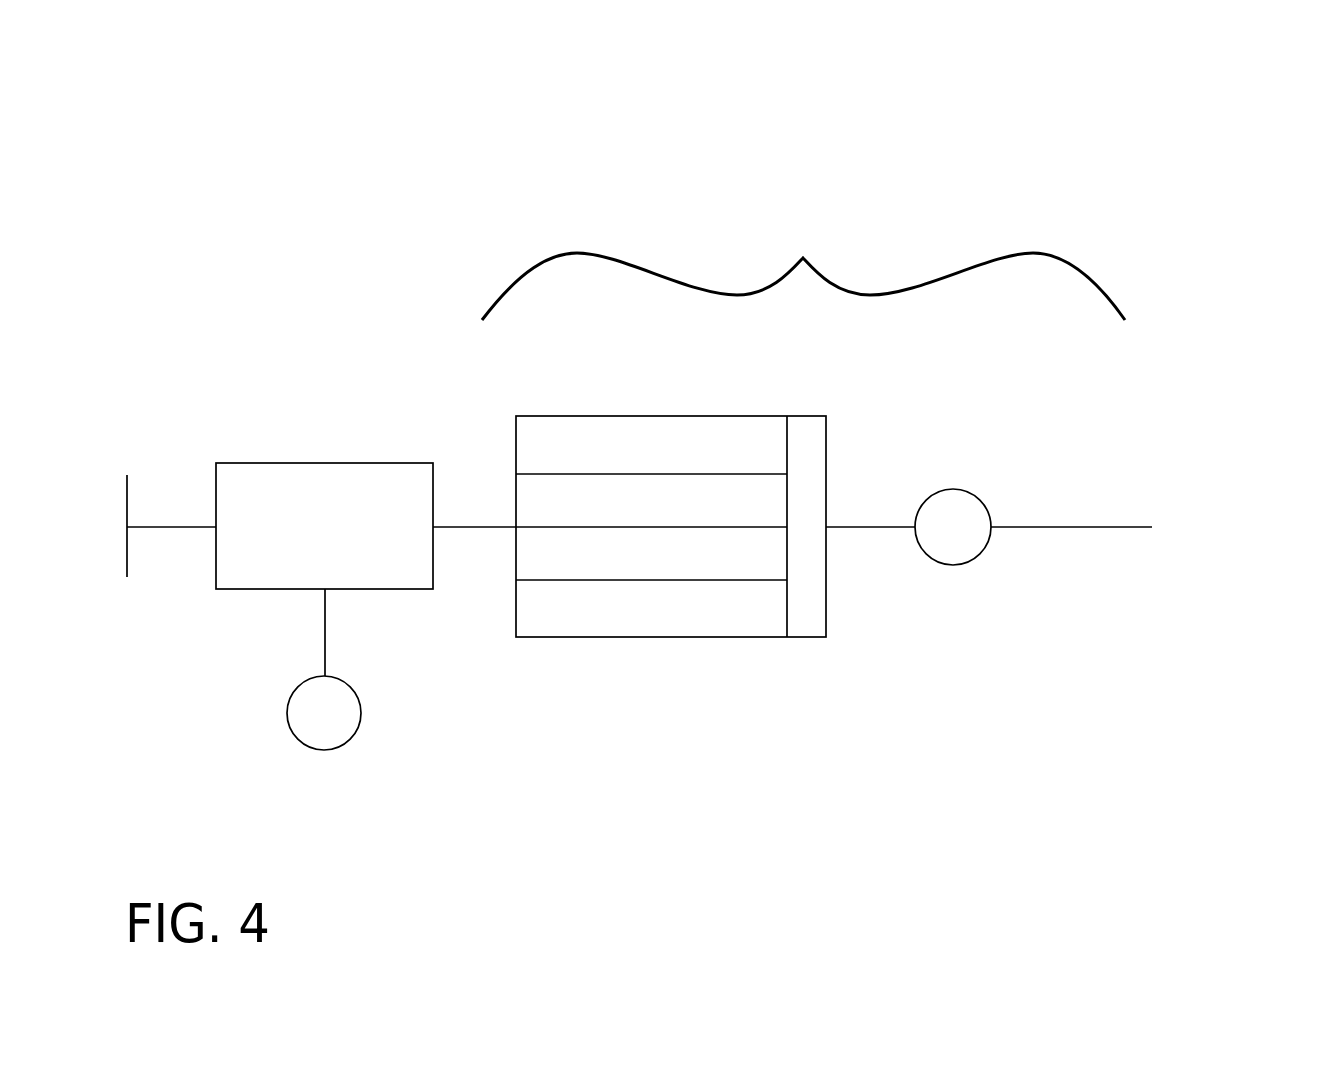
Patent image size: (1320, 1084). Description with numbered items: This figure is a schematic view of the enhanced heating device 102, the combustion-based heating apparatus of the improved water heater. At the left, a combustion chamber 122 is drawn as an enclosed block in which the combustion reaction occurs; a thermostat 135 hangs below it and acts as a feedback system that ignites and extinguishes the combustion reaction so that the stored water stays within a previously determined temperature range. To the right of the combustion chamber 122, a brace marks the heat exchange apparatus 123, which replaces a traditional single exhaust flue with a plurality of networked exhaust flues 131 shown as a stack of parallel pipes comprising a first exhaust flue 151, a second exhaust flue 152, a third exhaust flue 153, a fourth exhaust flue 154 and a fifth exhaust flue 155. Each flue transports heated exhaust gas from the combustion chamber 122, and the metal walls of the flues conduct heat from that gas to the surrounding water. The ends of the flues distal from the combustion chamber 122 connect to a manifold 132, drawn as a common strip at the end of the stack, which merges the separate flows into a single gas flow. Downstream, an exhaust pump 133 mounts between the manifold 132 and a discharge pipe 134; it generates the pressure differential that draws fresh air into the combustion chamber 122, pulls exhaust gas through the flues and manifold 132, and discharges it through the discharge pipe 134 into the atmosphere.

The enhanced heating device 102 is at (1168, 237).
The combustion chamber 122 is at (325, 463).
The heat exchange apparatus 123 is at (803, 252).
The plurality of networked exhaust flues 131 is at (672, 545).
The manifold 132 is at (805, 618).
The exhaust pump 133 is at (960, 563).
The discharge pipe 134 is at (1120, 525).
The thermostat 135 is at (353, 737).
The first exhaust flue 151 is at (637, 416).
The second exhaust flue 152 is at (622, 473).
The third exhaust flue 153 is at (622, 527).
The fourth exhaust flue 154 is at (622, 580).
The fifth exhaust flue 155 is at (622, 637).